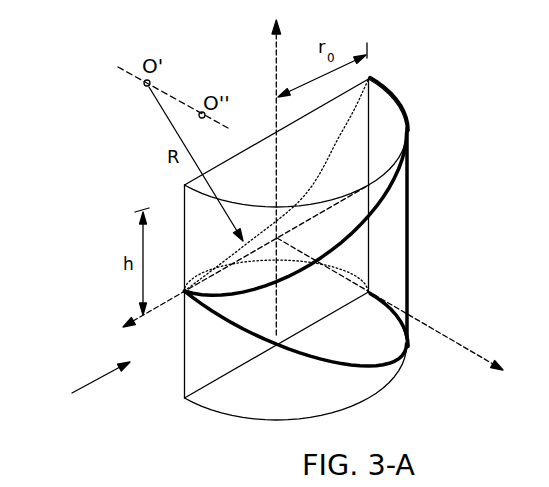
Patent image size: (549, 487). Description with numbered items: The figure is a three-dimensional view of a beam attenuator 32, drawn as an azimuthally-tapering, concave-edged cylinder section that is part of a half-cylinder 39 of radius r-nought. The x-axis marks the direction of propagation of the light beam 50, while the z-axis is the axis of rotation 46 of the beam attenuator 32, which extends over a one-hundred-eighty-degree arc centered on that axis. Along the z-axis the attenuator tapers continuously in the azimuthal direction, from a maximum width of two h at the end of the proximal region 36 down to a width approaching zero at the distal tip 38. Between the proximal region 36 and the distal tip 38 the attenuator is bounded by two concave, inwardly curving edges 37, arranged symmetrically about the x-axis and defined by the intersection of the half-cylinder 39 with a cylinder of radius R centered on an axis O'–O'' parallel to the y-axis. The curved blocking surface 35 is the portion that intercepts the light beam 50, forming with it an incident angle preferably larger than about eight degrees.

The beam attenuator 32 is at (452, 214).
The blocking surface 35 is at (393, 248).
The proximal region 36 is at (396, 72).
The concave, inwardly curving edges 37 is at (403, 182).
The distal tip 38 is at (199, 297).
The half-cylinder 39 is at (223, 414).
The axis of rotation 46 is at (277, 53).
The light beam 50 is at (110, 374).